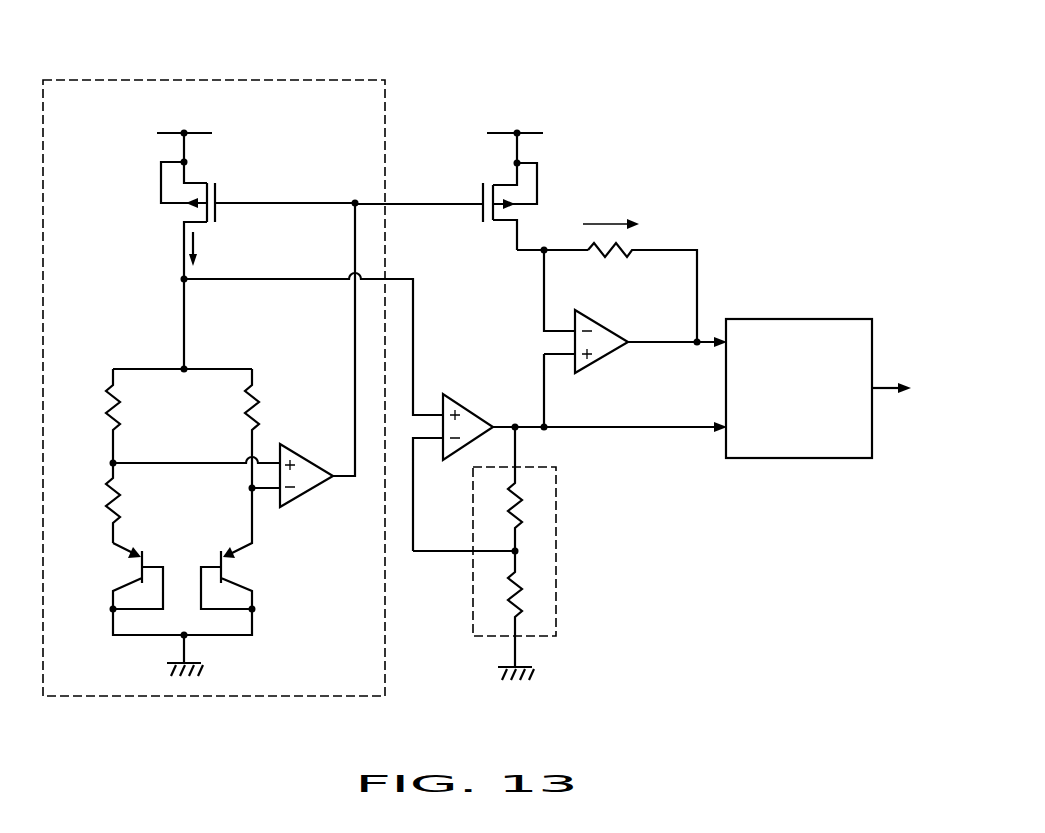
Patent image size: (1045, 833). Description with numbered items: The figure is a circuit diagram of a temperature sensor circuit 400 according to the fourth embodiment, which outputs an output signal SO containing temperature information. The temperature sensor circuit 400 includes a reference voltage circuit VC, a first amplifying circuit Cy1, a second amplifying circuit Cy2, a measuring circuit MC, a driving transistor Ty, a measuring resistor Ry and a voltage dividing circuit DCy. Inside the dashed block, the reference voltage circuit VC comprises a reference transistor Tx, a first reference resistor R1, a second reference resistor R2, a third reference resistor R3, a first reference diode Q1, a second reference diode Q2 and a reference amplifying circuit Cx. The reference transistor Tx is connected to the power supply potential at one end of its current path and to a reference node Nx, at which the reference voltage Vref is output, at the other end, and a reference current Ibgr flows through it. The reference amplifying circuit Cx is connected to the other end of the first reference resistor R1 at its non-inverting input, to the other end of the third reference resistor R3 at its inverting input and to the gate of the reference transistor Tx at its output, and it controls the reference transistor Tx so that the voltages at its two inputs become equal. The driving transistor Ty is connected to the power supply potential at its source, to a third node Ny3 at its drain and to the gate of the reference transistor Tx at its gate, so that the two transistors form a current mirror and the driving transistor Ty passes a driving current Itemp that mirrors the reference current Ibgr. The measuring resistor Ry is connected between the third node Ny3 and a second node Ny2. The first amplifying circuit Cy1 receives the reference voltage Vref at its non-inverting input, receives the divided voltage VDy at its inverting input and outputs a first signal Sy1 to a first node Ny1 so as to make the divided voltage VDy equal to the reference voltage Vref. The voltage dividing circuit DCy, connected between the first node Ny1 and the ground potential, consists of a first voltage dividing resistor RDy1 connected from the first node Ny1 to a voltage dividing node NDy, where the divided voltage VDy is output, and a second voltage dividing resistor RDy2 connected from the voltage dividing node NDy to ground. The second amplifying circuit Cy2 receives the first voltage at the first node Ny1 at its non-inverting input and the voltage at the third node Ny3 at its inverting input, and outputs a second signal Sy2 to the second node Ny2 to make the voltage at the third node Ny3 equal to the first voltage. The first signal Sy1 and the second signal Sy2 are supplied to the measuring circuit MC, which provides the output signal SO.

The reference voltage circuit VC is at (246, 80).
The reference transistor Tx is at (197, 184).
The driving transistor Ty is at (503, 185).
The reference current Ibgr is at (219, 249).
The reference node Nx is at (184, 279).
The reference voltage Vref is at (313, 333).
The first reference resistor R1 is at (110, 403).
The second reference resistor R2 is at (103, 490).
The third reference resistor R3 is at (255, 403).
The first reference diode Q1 is at (128, 550).
The second reference diode Q2 is at (233, 550).
The reference amplifying circuit Cx is at (312, 493).
The driving current Itemp is at (619, 210).
The third node Ny3 is at (540, 252).
The measuring resistor Ry is at (597, 257).
The second amplifying circuit Cy2 is at (573, 347).
The second signal Sy2 is at (677, 331).
The second node Ny2 is at (694, 348).
The first amplifying circuit Cy1 is at (478, 405).
The first signal Sy1 is at (610, 414).
The first node Ny1 is at (520, 430).
The divided voltage VDy is at (464, 536).
The voltage dividing circuit DCy is at (473, 605).
The first voltage dividing resistor RDy1 is at (520, 505).
The voltage dividing node NDy is at (520, 551).
The second voltage dividing resistor RDy2 is at (520, 595).
The measuring circuit MC is at (800, 318).
The output signal SO is at (910, 390).
The temperature sensor circuit 400 is at (706, 711).